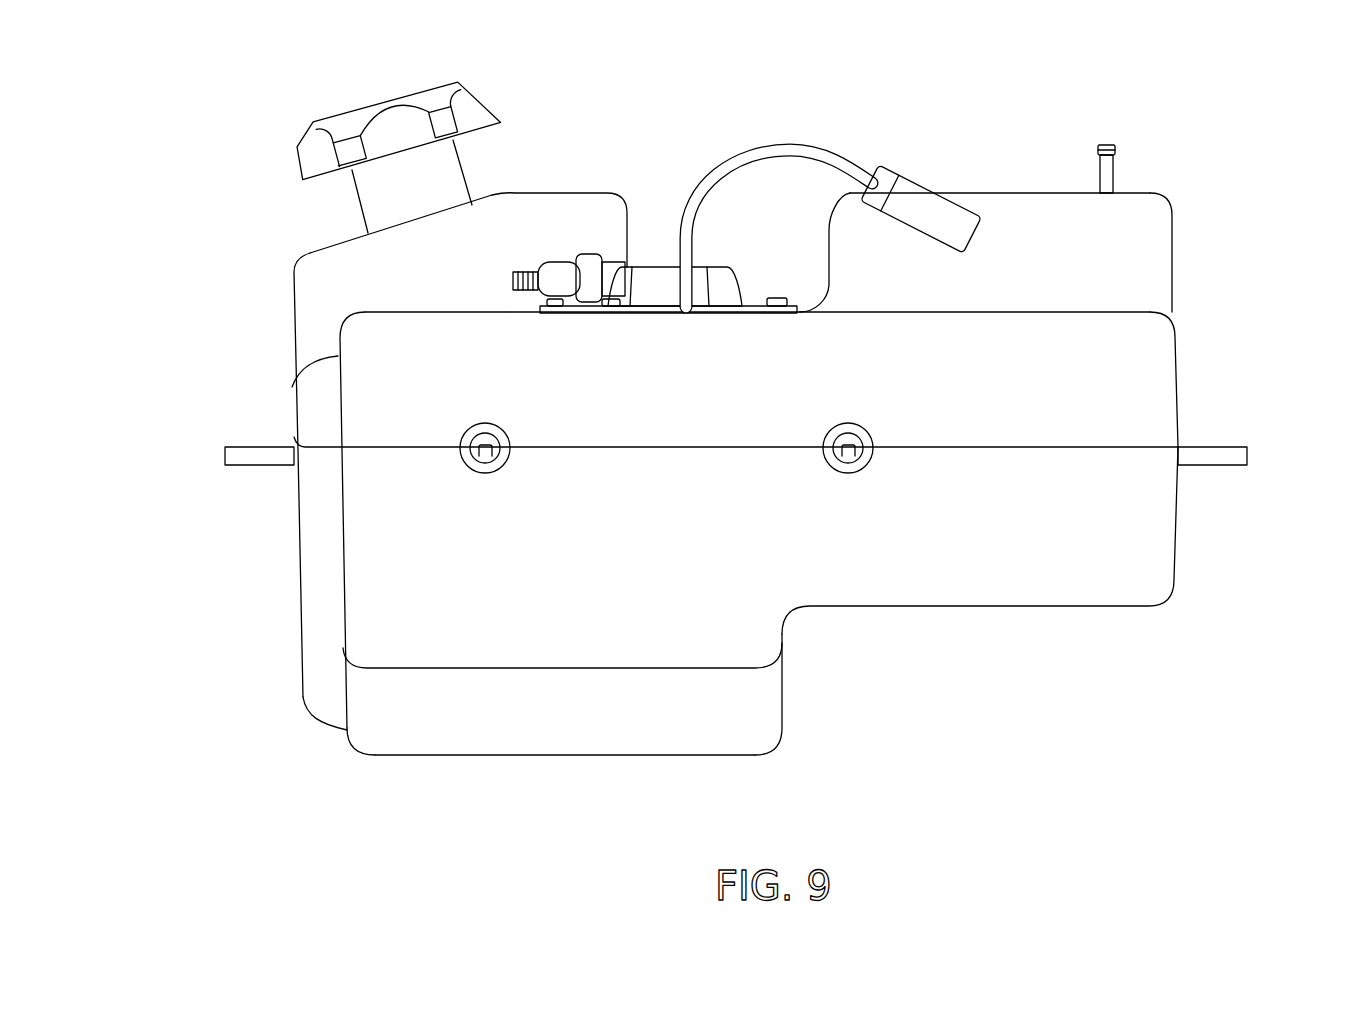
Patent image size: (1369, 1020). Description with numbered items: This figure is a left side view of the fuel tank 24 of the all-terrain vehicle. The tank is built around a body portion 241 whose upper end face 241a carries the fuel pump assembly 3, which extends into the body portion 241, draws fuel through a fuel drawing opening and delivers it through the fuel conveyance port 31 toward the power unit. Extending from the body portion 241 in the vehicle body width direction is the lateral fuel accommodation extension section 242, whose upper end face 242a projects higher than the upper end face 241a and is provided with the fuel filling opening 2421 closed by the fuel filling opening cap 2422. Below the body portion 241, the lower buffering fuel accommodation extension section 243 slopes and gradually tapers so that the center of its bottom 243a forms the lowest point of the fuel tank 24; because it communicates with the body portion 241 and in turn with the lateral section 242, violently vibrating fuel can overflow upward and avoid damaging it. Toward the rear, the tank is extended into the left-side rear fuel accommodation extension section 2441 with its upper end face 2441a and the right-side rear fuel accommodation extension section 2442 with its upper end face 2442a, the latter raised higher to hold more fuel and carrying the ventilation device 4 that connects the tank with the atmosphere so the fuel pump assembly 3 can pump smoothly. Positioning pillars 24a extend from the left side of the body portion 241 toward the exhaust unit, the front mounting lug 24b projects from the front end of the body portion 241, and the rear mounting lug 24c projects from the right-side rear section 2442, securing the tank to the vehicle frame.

The fuel tank 24 is at (734, 441).
The positioning pillars 24a is at (483, 455).
The front mounting lug 24b is at (225, 453).
The rear mounting lug 24c is at (1235, 455).
The body portion 241 is at (498, 419).
The upper end face of the body portion 241a is at (479, 313).
The lateral fuel accommodation extension section 242 is at (691, 461).
The upper end face of the lateral fuel accommodation extension section 242a is at (337, 240).
The fuel filling opening 2421 is at (417, 183).
The fuel filling opening cap 2422 is at (347, 125).
The lower buffering fuel accommodation extension section 243 is at (617, 734).
The bottom of the lower buffering fuel accommodation extension section 243a is at (487, 747).
The left-side rear fuel accommodation extension section 2441 is at (1046, 454).
The upper end face of the left-side rear fuel accommodation extension section 2441a is at (1093, 312).
The right-side rear fuel accommodation extension section 2442 is at (1043, 211).
The upper end face of the right-side rear fuel accommodation extension section 2442a is at (1030, 193).
The fuel pump assembly 3 is at (747, 214).
The fuel conveyance port 31 is at (557, 277).
The ventilation device 4 is at (1107, 145).